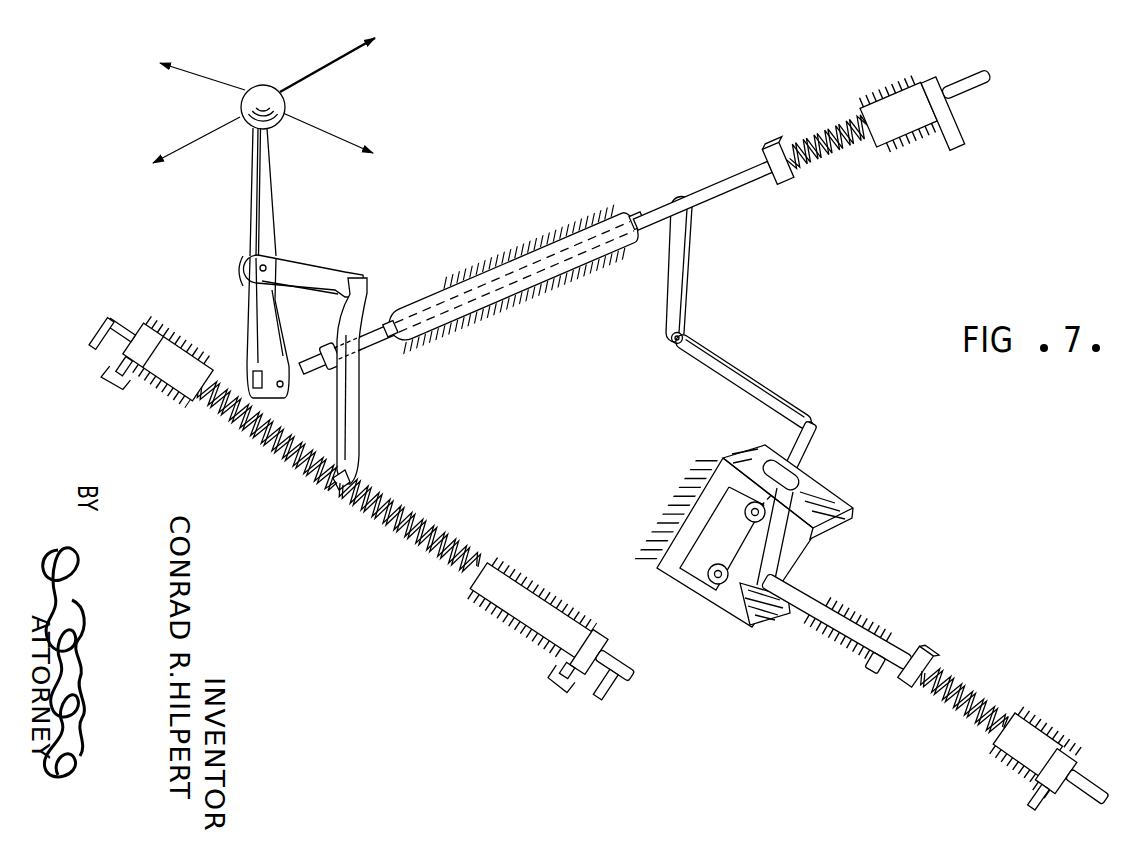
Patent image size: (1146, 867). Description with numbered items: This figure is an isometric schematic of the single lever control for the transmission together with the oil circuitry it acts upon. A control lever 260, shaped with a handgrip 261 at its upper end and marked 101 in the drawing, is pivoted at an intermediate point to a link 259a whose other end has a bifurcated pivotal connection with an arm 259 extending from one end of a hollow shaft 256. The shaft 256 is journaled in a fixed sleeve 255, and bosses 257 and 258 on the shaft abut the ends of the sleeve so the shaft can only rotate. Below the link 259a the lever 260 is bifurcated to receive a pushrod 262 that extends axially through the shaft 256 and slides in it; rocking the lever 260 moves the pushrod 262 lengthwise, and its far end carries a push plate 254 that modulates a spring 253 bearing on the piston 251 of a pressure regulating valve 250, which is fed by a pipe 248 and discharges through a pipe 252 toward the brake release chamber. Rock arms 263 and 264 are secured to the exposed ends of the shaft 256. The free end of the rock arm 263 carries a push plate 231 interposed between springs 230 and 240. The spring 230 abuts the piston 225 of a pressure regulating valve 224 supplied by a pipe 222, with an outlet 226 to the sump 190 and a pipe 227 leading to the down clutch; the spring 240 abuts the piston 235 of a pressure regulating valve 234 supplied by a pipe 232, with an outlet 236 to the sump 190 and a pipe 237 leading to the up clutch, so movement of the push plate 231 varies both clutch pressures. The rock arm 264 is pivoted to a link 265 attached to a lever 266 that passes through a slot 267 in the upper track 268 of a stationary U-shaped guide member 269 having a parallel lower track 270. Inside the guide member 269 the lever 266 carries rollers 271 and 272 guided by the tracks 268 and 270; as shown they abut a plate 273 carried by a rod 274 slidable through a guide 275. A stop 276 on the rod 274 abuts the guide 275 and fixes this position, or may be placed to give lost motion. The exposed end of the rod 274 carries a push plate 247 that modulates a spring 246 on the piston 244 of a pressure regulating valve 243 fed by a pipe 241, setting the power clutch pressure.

The control lever 101 is at (267, 84).
The handgrip 261 is at (287, 110).
The control lever 260 is at (277, 201).
The pressure regulating valve 234 is at (243, 320).
The link 259a is at (330, 268).
The arm 259 is at (385, 311).
The rock arm 263 is at (361, 436).
The push plate 231 is at (335, 500).
The spring 240 is at (292, 448).
The spring 230 is at (458, 552).
The piston 235 is at (150, 379).
The outlet 236 is at (141, 390).
The pipe 232 is at (107, 323).
The pipe 237 is at (97, 342).
The sump 190 is at (106, 373).
The piston 225 is at (523, 630).
The pressure regulating valve 224 is at (576, 614).
The pipe 222 is at (635, 674).
The pipe 227 is at (612, 694).
The outlet 226 is at (565, 665).
The rock arm 264 is at (692, 275).
The pushrod 262 is at (311, 376).
The hollow shaft 256 is at (379, 350).
The fixed sleeve 255 is at (557, 233).
The boss 257 is at (426, 335).
The boss 258 is at (641, 245).
The pipe 248 is at (978, 89).
The push plate 254 is at (769, 146).
The spring 253 is at (812, 140).
The piston 251 is at (880, 132).
The pressure regulating valve 250 is at (884, 92).
The pipe 252 is at (938, 143).
The link 265 is at (762, 378).
The lever 266 is at (808, 444).
The U-shaped guide member 269 is at (733, 450).
The upper track 268 is at (845, 501).
The slot 267 is at (800, 480).
The plate 273 is at (793, 548).
The roller 271 is at (743, 503).
The roller 272 is at (710, 566).
The lower track 270 is at (740, 622).
The rod 274 is at (800, 587).
The guide 275 is at (868, 605).
The stop 276 is at (873, 667).
The push plate 247 is at (922, 652).
The spring 246 is at (980, 694).
The piston 244 is at (1016, 755).
The pressure regulating valve 243 is at (1053, 728).
The pipe 241 is at (1094, 784).